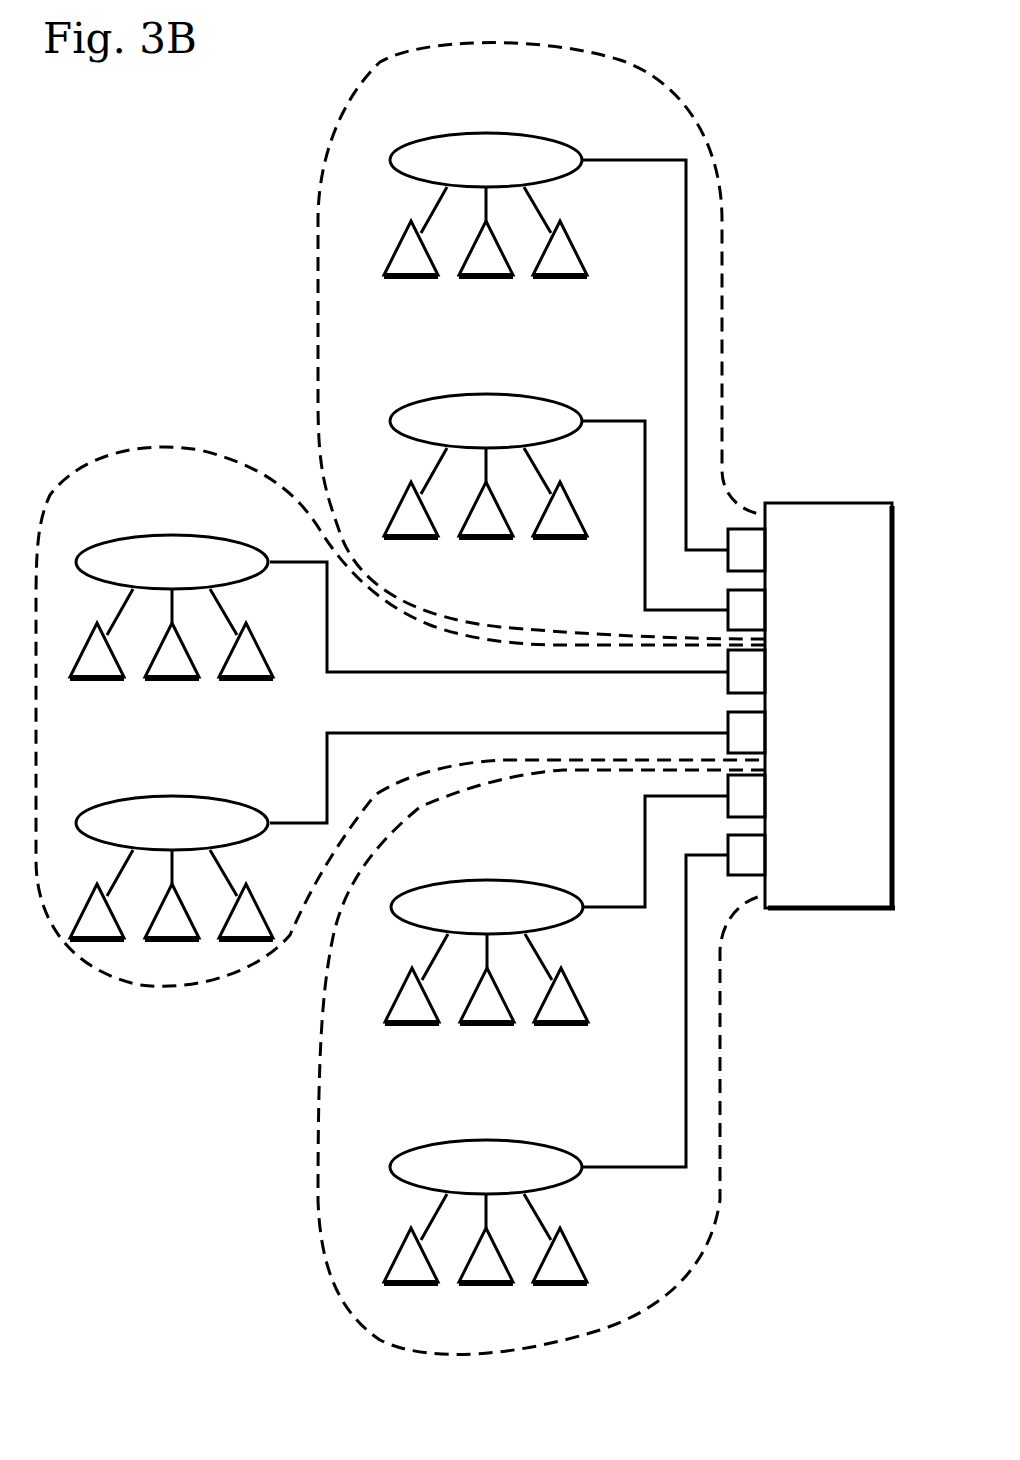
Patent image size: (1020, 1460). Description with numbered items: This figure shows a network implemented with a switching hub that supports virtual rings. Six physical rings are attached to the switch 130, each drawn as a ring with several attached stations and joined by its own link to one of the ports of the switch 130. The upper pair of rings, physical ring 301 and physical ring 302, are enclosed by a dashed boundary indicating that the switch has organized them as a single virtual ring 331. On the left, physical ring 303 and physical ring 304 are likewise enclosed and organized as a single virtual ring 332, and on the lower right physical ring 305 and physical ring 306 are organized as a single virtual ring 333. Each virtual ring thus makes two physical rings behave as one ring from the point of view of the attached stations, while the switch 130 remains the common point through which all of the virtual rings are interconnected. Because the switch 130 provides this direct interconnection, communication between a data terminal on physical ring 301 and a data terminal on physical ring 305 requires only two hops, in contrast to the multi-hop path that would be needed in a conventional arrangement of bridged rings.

The switch 130 is at (882, 897).
The physical ring 301 is at (480, 133).
The physical ring 302 is at (480, 395).
The physical ring 303 is at (168, 537).
The physical ring 304 is at (168, 797).
The physical ring 305 is at (480, 882).
The physical ring 306 is at (480, 1140).
The virtual ring 331 is at (316, 200).
The virtual ring 332 is at (163, 447).
The virtual ring 333 is at (316, 1078).